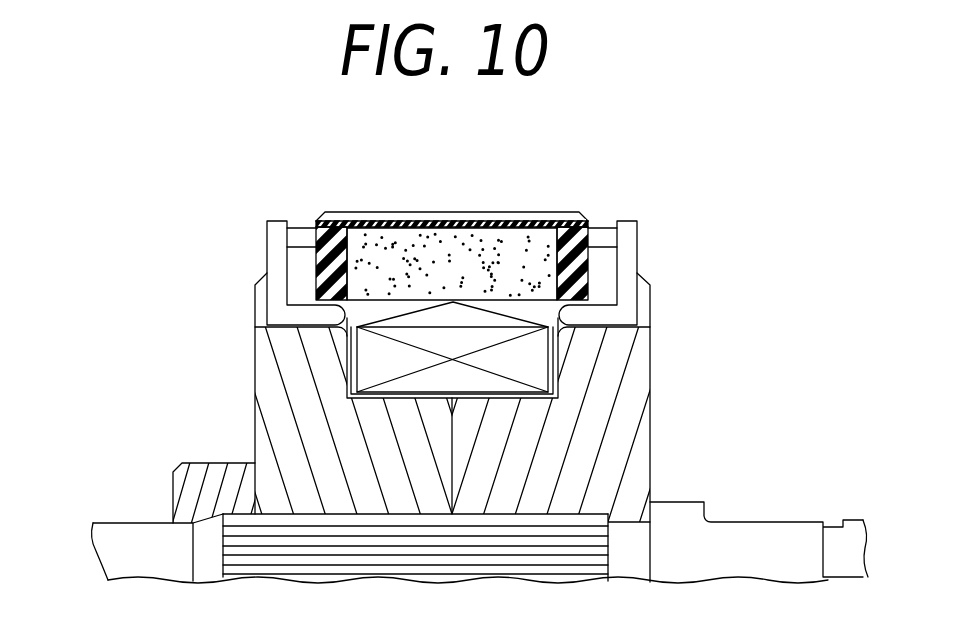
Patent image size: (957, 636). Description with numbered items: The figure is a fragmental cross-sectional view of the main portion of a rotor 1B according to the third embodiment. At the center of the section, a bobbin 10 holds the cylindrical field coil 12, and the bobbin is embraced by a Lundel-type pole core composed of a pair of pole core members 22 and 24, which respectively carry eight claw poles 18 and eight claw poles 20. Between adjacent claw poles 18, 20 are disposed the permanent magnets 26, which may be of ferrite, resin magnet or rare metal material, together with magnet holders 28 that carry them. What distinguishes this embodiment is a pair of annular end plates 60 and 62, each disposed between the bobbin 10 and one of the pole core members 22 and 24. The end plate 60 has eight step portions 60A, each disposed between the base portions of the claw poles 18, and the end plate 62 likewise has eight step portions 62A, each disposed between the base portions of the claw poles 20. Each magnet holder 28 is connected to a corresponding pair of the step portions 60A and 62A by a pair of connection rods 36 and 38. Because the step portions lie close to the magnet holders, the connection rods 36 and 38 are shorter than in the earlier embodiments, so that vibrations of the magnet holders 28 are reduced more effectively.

The rotor 1B is at (660, 167).
The bobbin 10 is at (537, 412).
The field coil 12 is at (537, 371).
The claw poles 18 is at (386, 308).
The claw poles 20 is at (512, 302).
The pole core member 22 is at (255, 432).
The pole core member 24 is at (635, 473).
The permanent magnets 26 is at (553, 225).
The magnet holders 28 is at (455, 221).
The connection rod 36 is at (301, 232).
The connection rod 38 is at (606, 228).
The annular end plate 60 is at (253, 193).
The step portions 60A is at (277, 263).
The annular end plate 62 is at (673, 242).
The step portions 62A is at (630, 263).